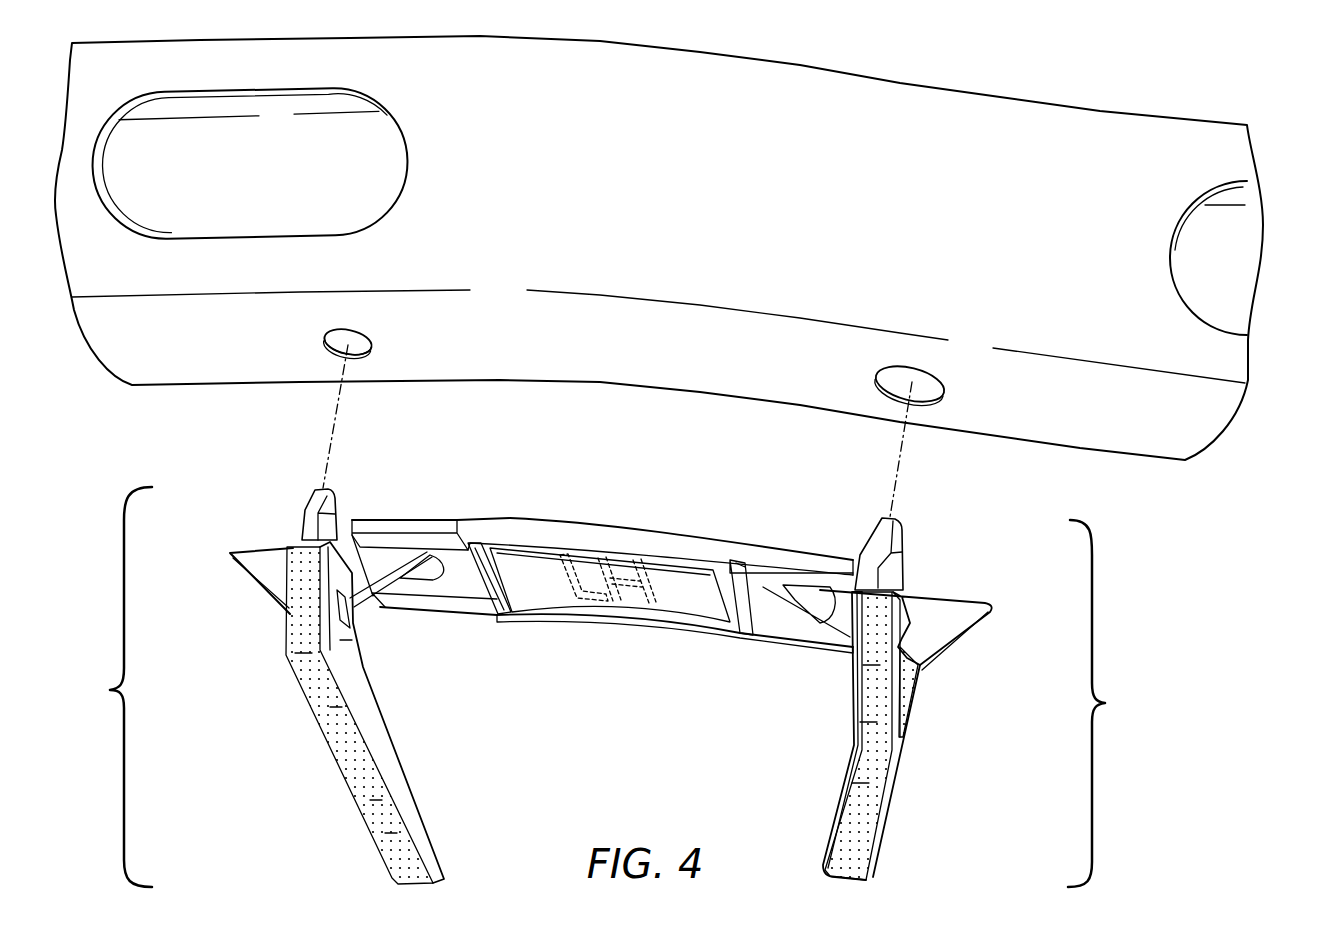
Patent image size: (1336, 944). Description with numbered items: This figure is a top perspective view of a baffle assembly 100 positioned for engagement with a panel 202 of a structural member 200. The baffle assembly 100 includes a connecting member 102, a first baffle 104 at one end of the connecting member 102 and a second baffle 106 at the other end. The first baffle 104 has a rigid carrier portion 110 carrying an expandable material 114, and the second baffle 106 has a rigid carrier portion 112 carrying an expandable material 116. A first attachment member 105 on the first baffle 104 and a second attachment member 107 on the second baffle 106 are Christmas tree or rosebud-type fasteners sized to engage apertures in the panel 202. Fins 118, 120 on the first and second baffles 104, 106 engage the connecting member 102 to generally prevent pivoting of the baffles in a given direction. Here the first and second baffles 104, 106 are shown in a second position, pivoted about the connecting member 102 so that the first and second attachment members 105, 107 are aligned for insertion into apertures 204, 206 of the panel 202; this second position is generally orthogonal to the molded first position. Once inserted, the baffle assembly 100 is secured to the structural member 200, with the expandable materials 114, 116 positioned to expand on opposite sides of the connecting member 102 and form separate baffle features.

The baffle assembly 100 is at (604, 676).
The connecting member 102 is at (615, 637).
The first baffle 104 is at (948, 703).
The first attachment member 105 is at (915, 545).
The second baffle 106 is at (272, 687).
The second attachment member 107 is at (300, 500).
The rigid carrier portion 110 is at (833, 823).
The rigid carrier portion 112 is at (400, 787).
The expandable material 114 is at (870, 818).
The expandable material 116 is at (343, 757).
The fin 118 is at (952, 622).
The fin 120 is at (262, 568).
The structural member 200 is at (689, 278).
The panel 202 is at (1003, 410).
The aperture 204 is at (867, 393).
The aperture 206 is at (320, 349).